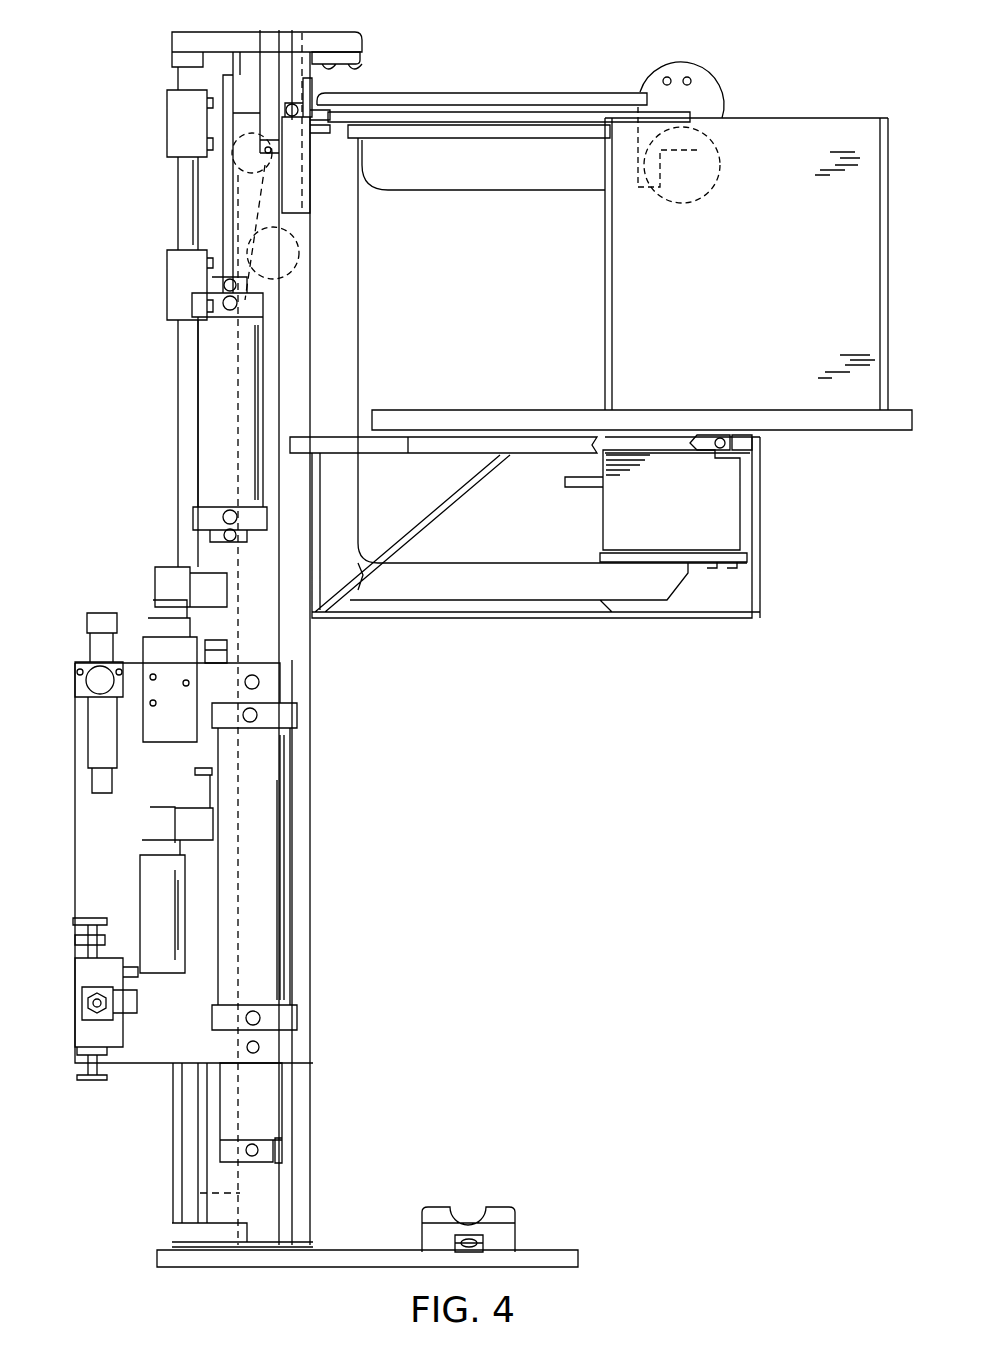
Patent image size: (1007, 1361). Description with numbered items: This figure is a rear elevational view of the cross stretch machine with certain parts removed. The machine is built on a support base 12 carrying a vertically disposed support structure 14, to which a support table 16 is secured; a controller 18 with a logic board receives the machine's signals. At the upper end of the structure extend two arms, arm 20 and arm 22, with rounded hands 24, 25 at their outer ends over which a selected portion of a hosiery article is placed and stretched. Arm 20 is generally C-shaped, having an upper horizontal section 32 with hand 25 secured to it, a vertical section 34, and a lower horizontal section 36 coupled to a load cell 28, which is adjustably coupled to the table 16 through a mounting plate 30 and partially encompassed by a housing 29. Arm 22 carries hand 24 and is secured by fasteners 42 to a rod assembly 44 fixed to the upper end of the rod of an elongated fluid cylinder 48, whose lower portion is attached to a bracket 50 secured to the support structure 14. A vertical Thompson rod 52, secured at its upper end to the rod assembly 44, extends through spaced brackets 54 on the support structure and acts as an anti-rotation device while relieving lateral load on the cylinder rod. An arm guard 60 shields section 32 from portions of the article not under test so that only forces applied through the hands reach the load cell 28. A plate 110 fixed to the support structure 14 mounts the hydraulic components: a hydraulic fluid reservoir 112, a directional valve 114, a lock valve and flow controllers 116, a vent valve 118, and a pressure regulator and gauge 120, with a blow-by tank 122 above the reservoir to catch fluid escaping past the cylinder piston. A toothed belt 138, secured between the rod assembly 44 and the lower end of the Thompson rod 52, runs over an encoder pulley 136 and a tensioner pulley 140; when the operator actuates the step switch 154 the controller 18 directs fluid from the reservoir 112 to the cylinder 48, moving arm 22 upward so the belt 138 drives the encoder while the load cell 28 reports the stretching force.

The support base 12 is at (340, 1252).
The vertical support structure 14 is at (312, 638).
The support table 16 is at (483, 408).
The controller 18 is at (770, 284).
The arm 20 is at (503, 88).
The arm 22 is at (549, 168).
The hand 24 is at (695, 90).
The hand 25 is at (700, 145).
The load cell 28 is at (640, 500).
The housing 29 is at (765, 585).
The mounting plate 30 is at (718, 438).
The upper horizontal section 32 is at (470, 100).
The vertical section 34 is at (360, 352).
The lower horizontal section 36 is at (553, 580).
The fasteners 42 is at (340, 68).
The rod assembly 44 is at (343, 26).
The fluid cylinder 48 is at (245, 95).
The bracket 50 is at (265, 1150).
The Thompson rod 52 is at (185, 232).
The brackets 54 is at (178, 113).
The arm guard 60 is at (464, 134).
The plate 110 is at (92, 838).
The hydraulic fluid reservoir 112 is at (273, 762).
The directional valve 114 is at (150, 908).
The lock valve and flow controllers 116 is at (105, 975).
The vent valve 118 is at (152, 650).
The pressure regulator and gauge 120 is at (80, 686).
The blow-by tank 122 is at (222, 416).
The pulley 136 is at (300, 255).
The toothed belt 138 is at (240, 212).
The tensioner pulley 140 is at (240, 152).
The step switch 154 is at (495, 1212).